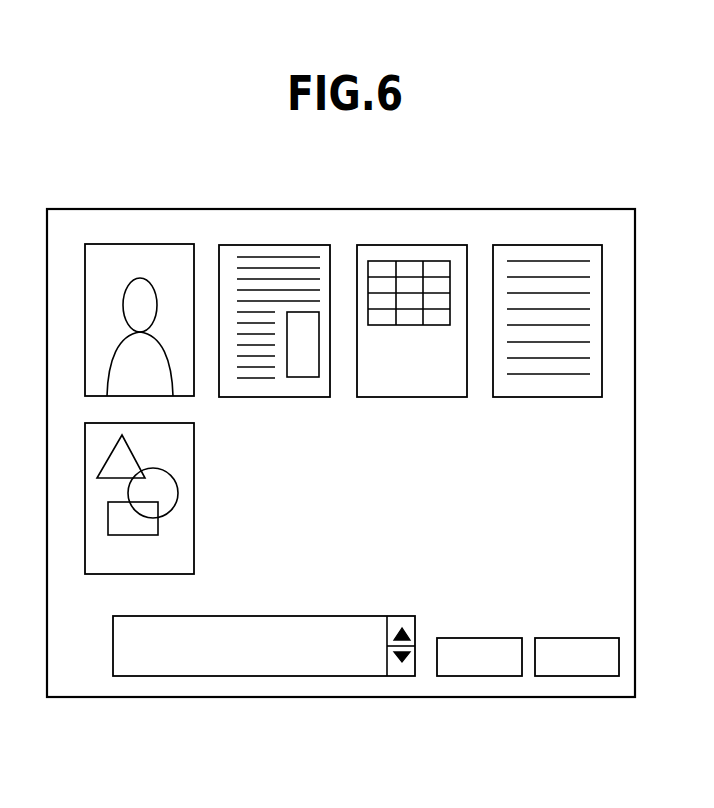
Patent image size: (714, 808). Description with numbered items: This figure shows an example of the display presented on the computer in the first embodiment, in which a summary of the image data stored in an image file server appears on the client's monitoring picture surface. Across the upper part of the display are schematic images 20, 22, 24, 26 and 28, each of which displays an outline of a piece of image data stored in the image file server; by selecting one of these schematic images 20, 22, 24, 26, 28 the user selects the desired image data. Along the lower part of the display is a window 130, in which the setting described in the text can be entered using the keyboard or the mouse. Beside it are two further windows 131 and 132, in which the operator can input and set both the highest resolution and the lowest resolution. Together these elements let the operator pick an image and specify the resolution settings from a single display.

The schematic image 20 is at (138, 250).
The schematic image 22 is at (273, 252).
The schematic image 24 is at (408, 252).
The schematic image 26 is at (530, 252).
The schematic image 28 is at (105, 560).
The window 130 is at (320, 615).
The window 131 is at (470, 638).
The window 132 is at (567, 638).